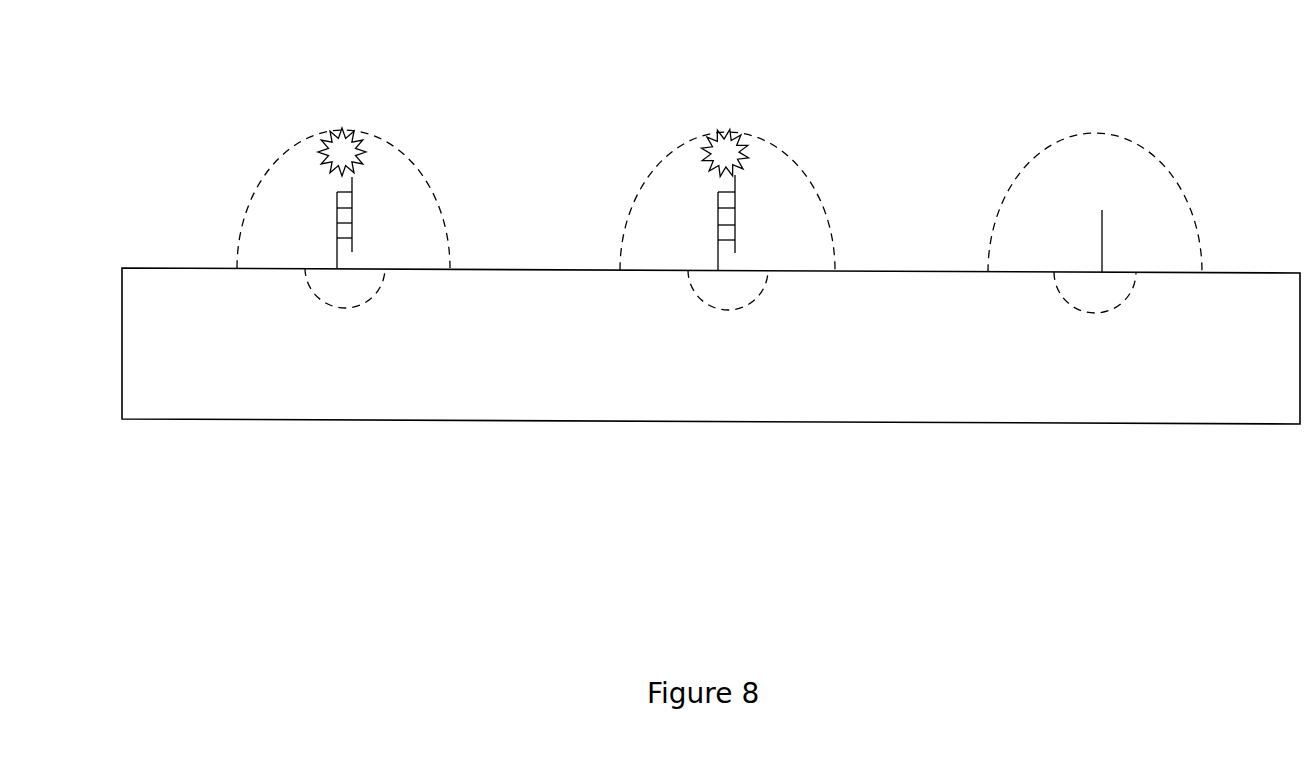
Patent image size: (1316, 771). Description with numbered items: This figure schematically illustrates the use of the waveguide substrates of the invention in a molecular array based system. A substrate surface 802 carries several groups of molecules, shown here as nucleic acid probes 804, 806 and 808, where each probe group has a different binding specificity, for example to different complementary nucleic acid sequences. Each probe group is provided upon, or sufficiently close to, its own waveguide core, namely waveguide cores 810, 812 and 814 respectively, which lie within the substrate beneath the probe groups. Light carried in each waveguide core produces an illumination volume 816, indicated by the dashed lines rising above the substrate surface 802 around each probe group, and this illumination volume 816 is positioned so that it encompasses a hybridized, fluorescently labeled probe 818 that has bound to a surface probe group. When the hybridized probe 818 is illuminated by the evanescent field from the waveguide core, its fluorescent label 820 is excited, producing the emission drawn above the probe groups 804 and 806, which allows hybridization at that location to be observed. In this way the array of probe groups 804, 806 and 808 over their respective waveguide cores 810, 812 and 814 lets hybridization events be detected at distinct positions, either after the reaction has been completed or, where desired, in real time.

The substrate surface 802 is at (184, 257).
The nucleic acid probe 804 is at (326, 238).
The nucleic acid probe 806 is at (708, 240).
The nucleic acid probe 808 is at (1091, 244).
The waveguide core 810 is at (345, 316).
The waveguide core 812 is at (728, 316).
The waveguide core 814 is at (1095, 316).
The illumination volume 816 is at (1012, 160).
The hybridized fluorescently labeled probe 818 is at (713, 183).
The fluorescent label 820 is at (329, 128).